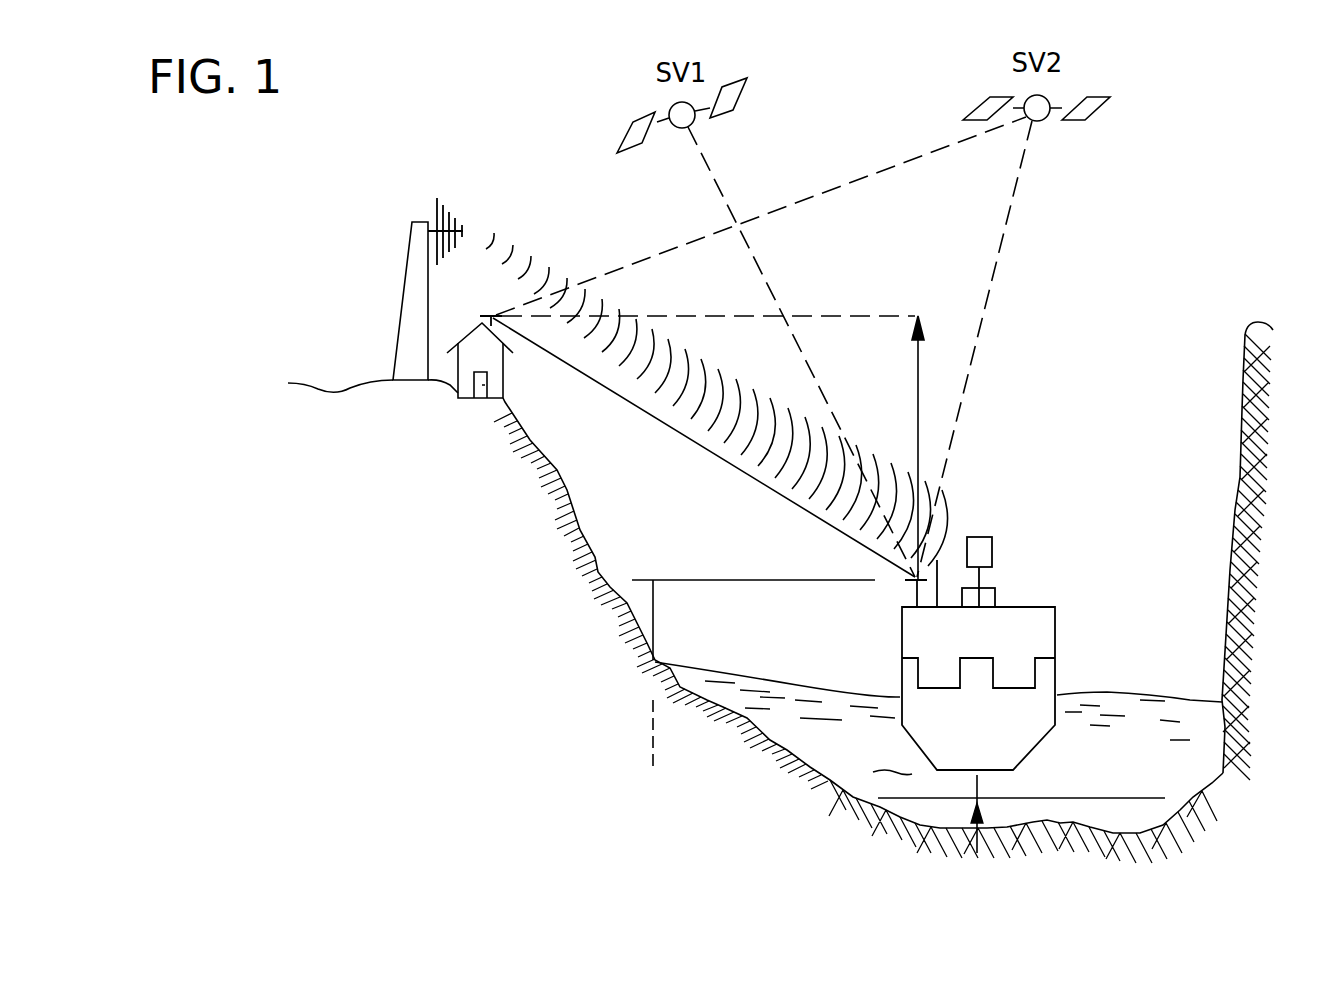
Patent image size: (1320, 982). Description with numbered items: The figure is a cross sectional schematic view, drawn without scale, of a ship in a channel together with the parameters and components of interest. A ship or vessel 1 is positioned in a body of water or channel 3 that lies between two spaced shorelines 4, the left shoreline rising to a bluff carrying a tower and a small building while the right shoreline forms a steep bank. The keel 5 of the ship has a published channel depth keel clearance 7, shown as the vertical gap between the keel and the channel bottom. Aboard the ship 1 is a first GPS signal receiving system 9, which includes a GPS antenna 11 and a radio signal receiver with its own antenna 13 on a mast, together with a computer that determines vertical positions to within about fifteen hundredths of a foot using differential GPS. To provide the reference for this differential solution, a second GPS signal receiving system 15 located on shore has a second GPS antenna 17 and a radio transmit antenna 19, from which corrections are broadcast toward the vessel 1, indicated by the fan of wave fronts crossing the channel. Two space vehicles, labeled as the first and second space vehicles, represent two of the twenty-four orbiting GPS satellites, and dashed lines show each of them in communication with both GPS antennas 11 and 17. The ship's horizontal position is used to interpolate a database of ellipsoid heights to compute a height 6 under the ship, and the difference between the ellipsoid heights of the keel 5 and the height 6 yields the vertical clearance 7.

The ship 1 is at (977, 765).
The channel 3 is at (1121, 752).
The shoreline 4 is at (501, 571).
The keel 5 is at (1003, 771).
The height under the ship 6 is at (956, 798).
The keel clearance 7 is at (978, 783).
The first GPS signal receiving system 9 is at (978, 482).
The antenna 11 is at (912, 592).
The antenna 13 is at (943, 565).
The second GPS signal receiving system 15 is at (518, 108).
The second GPS antenna 17 is at (487, 316).
The radio transmit antenna 19 is at (457, 232).